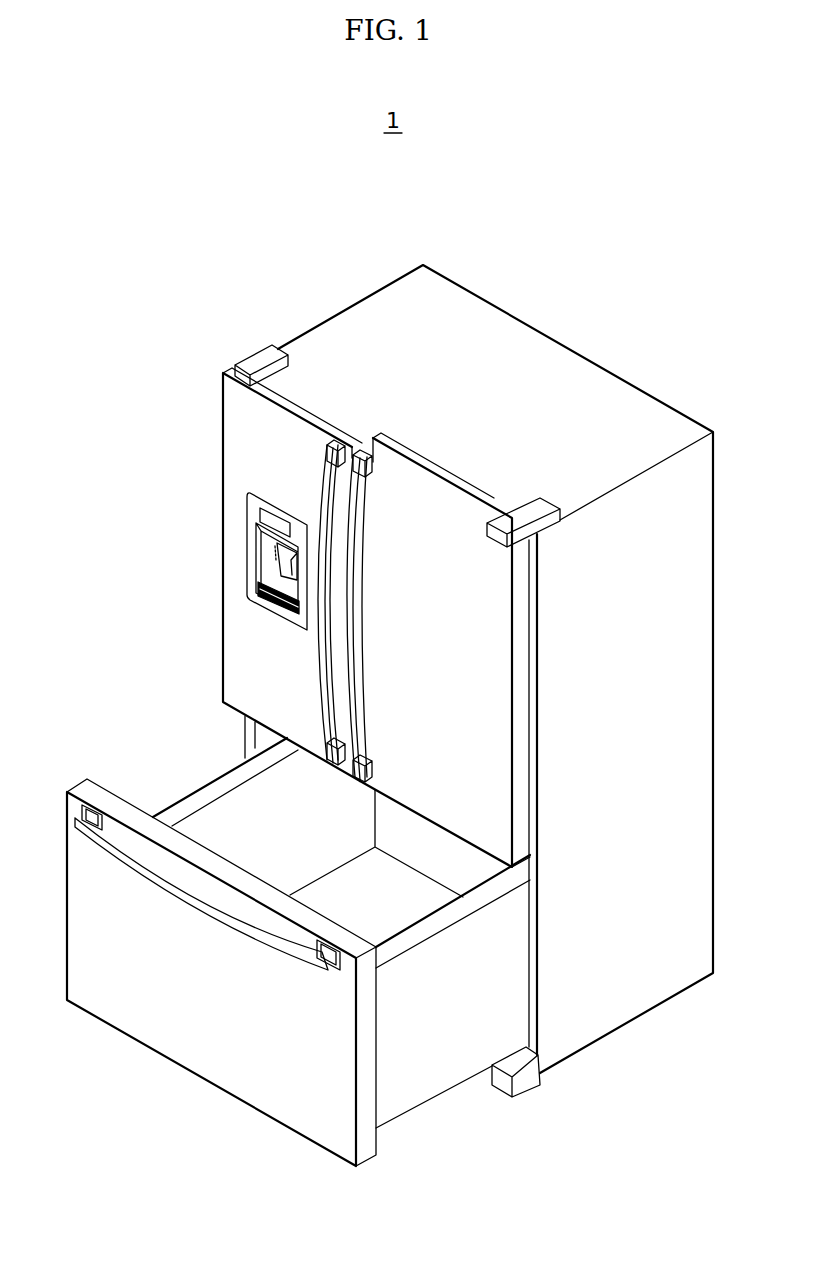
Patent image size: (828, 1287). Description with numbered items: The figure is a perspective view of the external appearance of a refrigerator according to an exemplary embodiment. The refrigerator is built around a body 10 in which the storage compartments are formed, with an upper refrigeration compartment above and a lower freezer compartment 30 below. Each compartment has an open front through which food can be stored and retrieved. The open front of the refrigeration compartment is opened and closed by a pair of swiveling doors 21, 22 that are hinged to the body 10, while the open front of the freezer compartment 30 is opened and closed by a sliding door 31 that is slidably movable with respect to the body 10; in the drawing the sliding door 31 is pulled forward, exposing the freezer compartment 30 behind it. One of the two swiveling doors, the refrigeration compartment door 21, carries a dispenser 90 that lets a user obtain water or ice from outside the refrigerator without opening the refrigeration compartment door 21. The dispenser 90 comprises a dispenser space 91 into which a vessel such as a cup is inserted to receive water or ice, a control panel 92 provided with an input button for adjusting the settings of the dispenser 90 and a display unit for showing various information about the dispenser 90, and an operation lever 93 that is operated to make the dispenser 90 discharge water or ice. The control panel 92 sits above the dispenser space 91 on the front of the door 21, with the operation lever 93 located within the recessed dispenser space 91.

The body 10 is at (566, 340).
The refrigeration compartment door 21 is at (243, 662).
The refrigeration compartment door 22 is at (522, 535).
The freezer compartment 30 is at (282, 803).
The sliding door 31 is at (150, 1035).
The dispenser 90 is at (236, 516).
The dispenser space 91 is at (267, 565).
The control panel 92 is at (275, 515).
The operation lever 93 is at (283, 570).